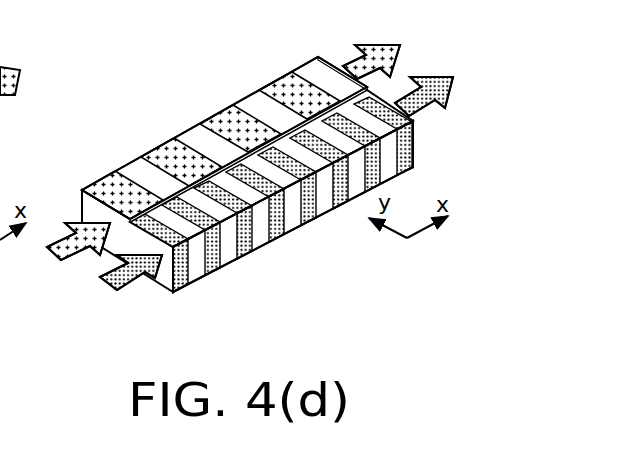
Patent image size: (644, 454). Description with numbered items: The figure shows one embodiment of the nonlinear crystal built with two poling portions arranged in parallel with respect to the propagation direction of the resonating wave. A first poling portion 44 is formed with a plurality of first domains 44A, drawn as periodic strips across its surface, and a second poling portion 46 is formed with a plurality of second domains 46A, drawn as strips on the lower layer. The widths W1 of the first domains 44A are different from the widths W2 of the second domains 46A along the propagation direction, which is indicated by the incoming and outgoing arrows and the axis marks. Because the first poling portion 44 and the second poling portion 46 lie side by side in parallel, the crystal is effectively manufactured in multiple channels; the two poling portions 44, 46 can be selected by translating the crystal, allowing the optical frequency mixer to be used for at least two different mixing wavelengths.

The first poling portion 44 is at (212, 122).
The first domains 44A is at (266, 97).
The second poling portion 46 is at (252, 220).
The second domains 46A is at (235, 258).
The width of the first domains W1 is at (218, 105).
The width of the second domains W2 is at (250, 323).